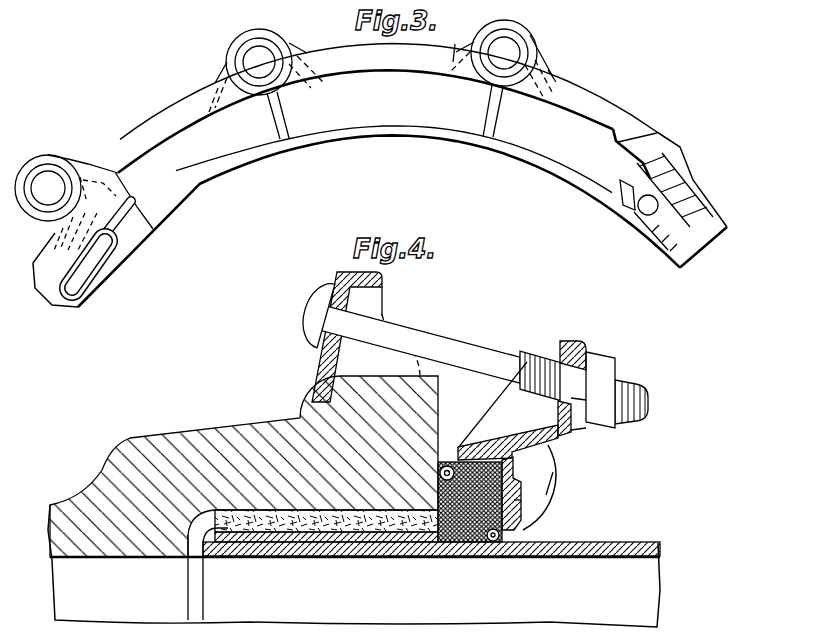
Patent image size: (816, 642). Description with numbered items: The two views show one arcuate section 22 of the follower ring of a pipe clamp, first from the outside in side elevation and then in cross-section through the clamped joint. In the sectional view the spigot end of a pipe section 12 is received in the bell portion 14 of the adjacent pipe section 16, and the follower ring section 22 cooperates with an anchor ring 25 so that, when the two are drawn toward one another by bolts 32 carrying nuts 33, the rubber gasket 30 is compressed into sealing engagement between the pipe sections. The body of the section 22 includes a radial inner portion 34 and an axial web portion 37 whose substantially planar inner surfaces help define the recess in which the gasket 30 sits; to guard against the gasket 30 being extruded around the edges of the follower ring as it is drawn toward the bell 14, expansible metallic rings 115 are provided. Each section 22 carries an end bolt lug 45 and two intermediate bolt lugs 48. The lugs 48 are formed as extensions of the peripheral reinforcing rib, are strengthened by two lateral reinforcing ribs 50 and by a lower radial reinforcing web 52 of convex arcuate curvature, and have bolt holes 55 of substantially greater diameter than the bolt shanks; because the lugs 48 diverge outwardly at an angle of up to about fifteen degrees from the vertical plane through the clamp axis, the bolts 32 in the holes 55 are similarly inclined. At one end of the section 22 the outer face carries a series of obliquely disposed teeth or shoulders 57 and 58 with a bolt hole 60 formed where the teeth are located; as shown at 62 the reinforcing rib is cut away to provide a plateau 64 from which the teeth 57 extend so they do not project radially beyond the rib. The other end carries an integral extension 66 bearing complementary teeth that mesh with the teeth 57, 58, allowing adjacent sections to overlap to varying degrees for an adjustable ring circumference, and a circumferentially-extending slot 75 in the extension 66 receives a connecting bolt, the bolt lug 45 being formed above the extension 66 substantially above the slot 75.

In FIG. 4, the pipe section 12 is at (622, 542).
In FIG. 4, the bell portion 14 is at (230, 431).
In FIG. 4, the adjacent pipe section 16 is at (64, 504).
In FIG. 4, the arcuate section 22 is at (560, 446).
In FIG. 4, the anchor ring 25 is at (348, 275).
In FIG. 4, the gasket 30 is at (461, 538).
In FIG. 4, the bolt 32 is at (478, 348).
In FIG. 4, the nut 33 is at (608, 367).
In FIG. 4, the radial inner portion 34 is at (522, 510).
In FIG. 4, the axial web portion 37 is at (460, 447).
In FIG. 3, the end bolt lug 45 is at (49, 155).
In FIG. 3, the intermediate bolt lug 48 is at (236, 48).
In FIG. 3, the lateral reinforcing rib 50 is at (454, 60).
In FIG. 4, the lateral reinforcing rib 50 is at (558, 462).
In FIG. 3, the lower radial reinforcing web 52 is at (284, 140).
In FIG. 4, the lower radial reinforcing web 52 is at (541, 487).
In FIG. 4, the bolt hole 55 is at (577, 420).
In FIG. 3, the tooth or shoulder 57 is at (707, 219).
In FIG. 3, the tooth or shoulder 58 is at (680, 266).
In FIG. 3, the bolt hole 60 is at (640, 218).
In FIG. 3, the cut-away of reinforcing rib 62 is at (648, 134).
In FIG. 3, the plateau 64 is at (678, 162).
In FIG. 3, the integral extension 66 is at (127, 263).
In FIG. 3, the circumferentially-extending slot 75 is at (82, 282).
In FIG. 4, the expansible metallic ring 115 is at (495, 542).